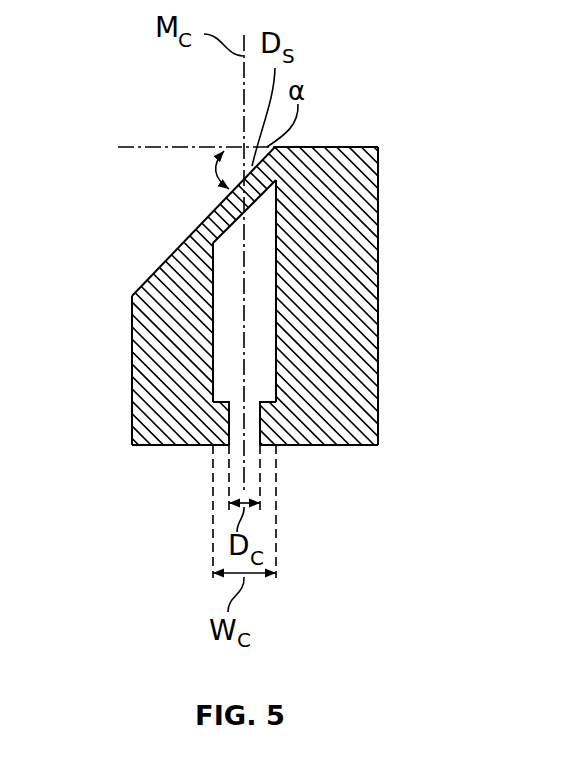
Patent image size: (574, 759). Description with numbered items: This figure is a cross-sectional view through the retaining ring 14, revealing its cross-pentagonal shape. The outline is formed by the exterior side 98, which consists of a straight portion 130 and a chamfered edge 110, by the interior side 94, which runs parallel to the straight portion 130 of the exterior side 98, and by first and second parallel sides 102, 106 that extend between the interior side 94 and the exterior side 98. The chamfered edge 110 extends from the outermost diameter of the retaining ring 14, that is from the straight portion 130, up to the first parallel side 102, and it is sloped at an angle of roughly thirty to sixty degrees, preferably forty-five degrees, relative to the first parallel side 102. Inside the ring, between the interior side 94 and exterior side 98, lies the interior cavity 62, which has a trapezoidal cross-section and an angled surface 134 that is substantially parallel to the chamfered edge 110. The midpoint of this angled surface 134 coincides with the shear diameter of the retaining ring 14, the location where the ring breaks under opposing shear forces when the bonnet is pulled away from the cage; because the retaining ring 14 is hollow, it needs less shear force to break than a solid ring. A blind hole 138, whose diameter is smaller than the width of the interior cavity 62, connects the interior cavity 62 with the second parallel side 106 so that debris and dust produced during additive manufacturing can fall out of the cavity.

The retaining ring 14 is at (404, 169).
The interior cavity 62 is at (266, 260).
The interior side 94 is at (378, 318).
The exterior side 98 is at (132, 340).
The first parallel side 102 is at (332, 147).
The second parallel side 106 is at (318, 447).
The chamfered edge 110 is at (144, 284).
The straight portion 130 is at (132, 410).
The angled surface 134 is at (217, 242).
The blind hole 138 is at (262, 436).